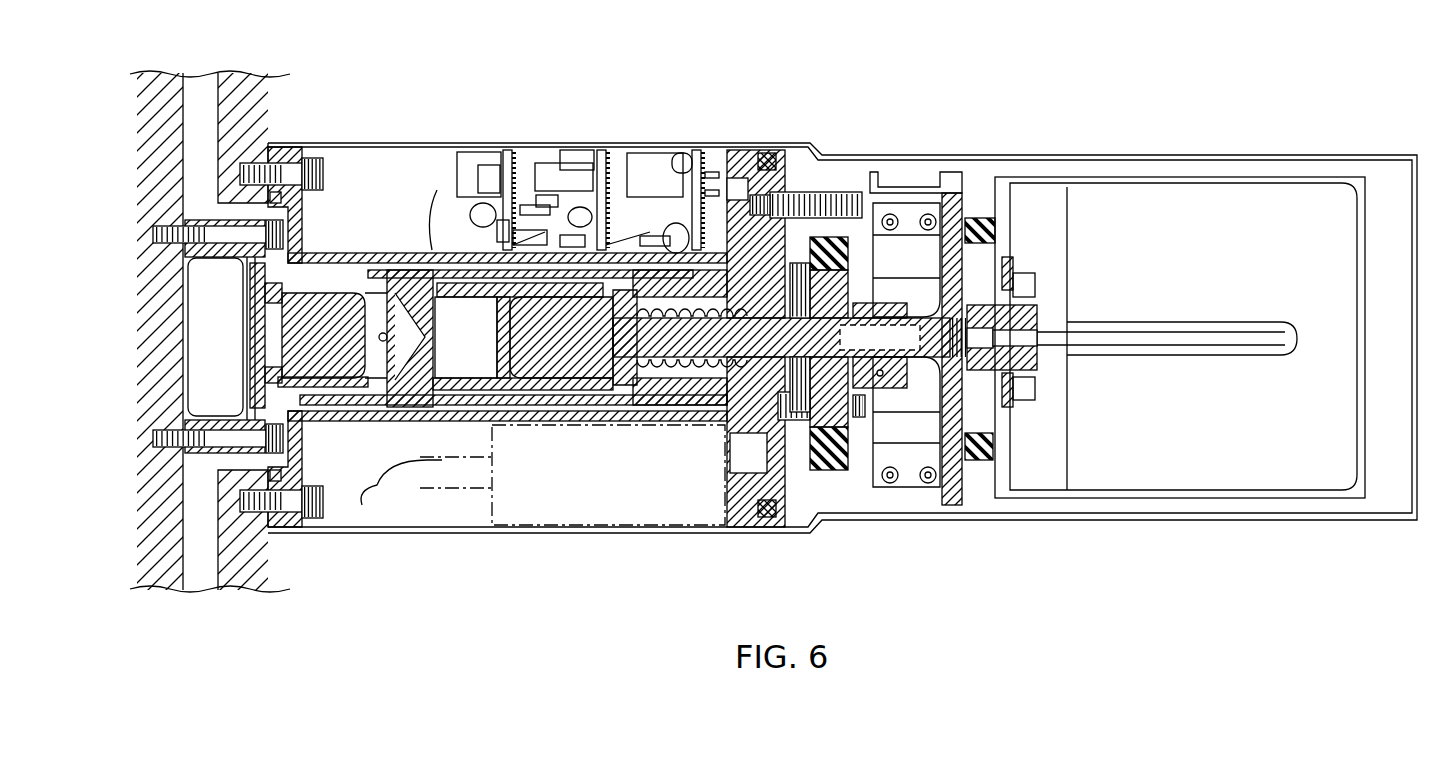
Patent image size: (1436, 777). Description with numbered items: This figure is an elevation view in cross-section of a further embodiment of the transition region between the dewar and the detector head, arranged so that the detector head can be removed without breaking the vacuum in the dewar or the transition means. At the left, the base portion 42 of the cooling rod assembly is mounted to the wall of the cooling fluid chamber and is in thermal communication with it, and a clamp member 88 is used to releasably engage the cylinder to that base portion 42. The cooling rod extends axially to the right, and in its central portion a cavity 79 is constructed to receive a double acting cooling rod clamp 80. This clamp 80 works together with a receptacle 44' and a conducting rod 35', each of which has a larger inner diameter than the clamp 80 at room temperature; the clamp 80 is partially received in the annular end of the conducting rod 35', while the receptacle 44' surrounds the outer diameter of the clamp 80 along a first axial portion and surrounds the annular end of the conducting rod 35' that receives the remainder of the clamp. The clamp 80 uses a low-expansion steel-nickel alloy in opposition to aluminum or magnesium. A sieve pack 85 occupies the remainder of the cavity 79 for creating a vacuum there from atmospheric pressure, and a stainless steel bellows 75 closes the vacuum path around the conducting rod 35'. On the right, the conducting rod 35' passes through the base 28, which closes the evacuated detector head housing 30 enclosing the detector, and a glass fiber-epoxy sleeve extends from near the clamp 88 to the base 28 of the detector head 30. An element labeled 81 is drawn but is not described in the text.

The base 28 is at (762, 230).
The detector head housing 30 is at (908, 524).
The conducting rod 35' is at (632, 373).
The base portion 42 is at (268, 287).
The receptacle 44' is at (540, 199).
The bellows 75 is at (708, 378).
The cavity 79 is at (505, 385).
The double acting cooling rod clamp 80 is at (543, 320).
The lower plate 81 is at (447, 399).
The sieve pack 85 is at (478, 370).
The clamp member 88 is at (324, 317).